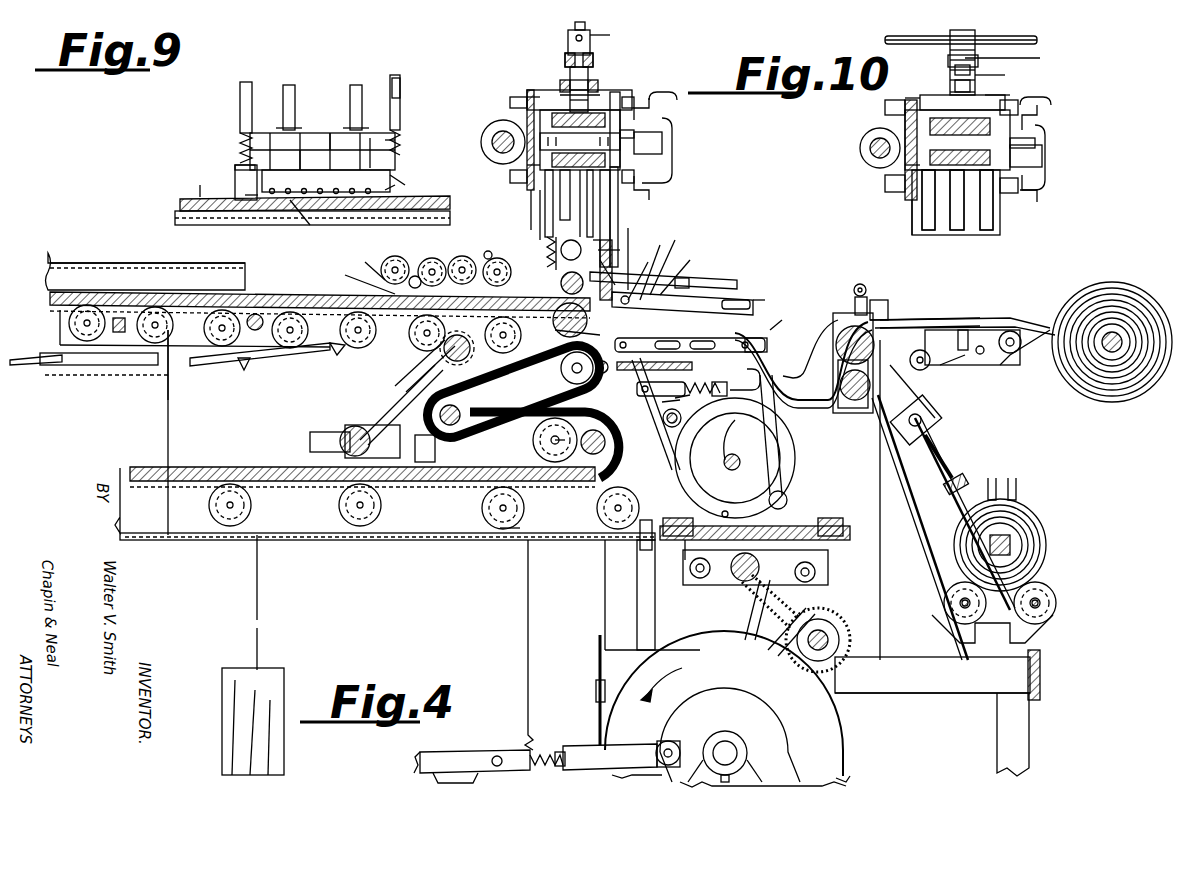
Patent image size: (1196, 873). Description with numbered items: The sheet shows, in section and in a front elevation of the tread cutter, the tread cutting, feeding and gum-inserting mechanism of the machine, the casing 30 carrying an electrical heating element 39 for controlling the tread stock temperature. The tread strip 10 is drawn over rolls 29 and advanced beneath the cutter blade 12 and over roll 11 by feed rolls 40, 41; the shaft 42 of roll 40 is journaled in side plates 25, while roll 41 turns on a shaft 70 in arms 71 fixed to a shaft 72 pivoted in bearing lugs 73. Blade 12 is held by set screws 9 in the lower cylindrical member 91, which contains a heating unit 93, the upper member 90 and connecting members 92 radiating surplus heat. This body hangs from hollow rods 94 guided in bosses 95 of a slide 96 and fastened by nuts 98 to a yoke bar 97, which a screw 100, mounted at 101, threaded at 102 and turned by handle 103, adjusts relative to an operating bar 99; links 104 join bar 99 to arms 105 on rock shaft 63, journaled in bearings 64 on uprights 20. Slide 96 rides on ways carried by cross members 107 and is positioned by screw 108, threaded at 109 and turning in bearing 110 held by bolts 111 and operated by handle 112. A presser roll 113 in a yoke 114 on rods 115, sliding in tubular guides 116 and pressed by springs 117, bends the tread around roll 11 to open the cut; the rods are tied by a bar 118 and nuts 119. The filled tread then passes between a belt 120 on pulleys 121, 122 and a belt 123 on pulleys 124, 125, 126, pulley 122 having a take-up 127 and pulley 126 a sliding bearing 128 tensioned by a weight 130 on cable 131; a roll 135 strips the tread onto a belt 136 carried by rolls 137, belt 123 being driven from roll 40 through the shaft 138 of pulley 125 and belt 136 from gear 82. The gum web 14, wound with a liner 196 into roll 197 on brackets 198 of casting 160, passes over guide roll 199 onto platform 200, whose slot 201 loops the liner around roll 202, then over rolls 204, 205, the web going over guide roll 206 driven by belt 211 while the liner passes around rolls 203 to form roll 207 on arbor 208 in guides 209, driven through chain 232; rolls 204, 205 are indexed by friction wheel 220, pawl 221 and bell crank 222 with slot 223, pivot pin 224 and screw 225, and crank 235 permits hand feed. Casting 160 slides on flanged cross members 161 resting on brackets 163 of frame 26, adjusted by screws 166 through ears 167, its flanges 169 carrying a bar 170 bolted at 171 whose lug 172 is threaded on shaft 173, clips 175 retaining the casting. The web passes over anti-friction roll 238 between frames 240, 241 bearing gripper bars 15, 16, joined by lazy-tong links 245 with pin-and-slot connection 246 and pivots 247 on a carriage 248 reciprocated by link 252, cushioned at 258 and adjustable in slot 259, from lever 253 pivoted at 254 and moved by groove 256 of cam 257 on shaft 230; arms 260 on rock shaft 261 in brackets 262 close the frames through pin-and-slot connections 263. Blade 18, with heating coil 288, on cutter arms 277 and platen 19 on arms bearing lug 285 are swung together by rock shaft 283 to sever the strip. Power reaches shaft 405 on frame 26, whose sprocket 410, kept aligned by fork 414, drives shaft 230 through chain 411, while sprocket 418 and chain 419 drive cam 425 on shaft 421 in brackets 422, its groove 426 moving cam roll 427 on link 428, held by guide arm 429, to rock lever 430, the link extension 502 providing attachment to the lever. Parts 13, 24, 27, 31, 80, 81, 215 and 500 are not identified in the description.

In FIG. 9, the set screws 9 is at (310, 225).
In FIG. 9, the tread strip 10 is at (203, 197).
In FIG. 4, the tread strip 10 is at (305, 291).
In FIG. 9, the roll 11 is at (178, 208).
In FIG. 4, the roll 11 is at (565, 338).
In FIG. 9, the cutter blade 12 is at (395, 180).
In FIG. 4, the cutter blade 12 is at (612, 270).
In FIG. 4, the frame arm 13 is at (654, 418).
In FIG. 4, the gum strip 14 is at (790, 380).
In FIG. 4, the gripper bar 15 is at (643, 269).
In FIG. 4, the gripper bar 16 is at (544, 426).
In FIG. 4, the cutting blade 18 is at (656, 262).
In FIG. 4, the platen 19 is at (588, 452).
In FIG. 4, the upright 20 is at (535, 600).
In FIG. 4, the frame plate 24 is at (120, 480).
In FIG. 4, the side plates 25 is at (185, 407).
In FIG. 4, the frame 26 is at (1000, 708).
In FIG. 4, the guide strip 27 is at (30, 365).
In FIG. 4, the rolls 29 is at (160, 340).
In FIG. 4, the casing 30 is at (48, 275).
In FIG. 4, the table top 31 is at (80, 263).
In FIG. 4, the electrical heating element 39 is at (90, 365).
In FIG. 4, the lower feed roll 40 is at (465, 350).
In FIG. 4, the upper feed roll 41 is at (488, 251).
In FIG. 4, the shaft 42 is at (430, 322).
In FIG. 10, the rock shaft 63 is at (870, 148).
In FIG. 4, the rock shaft 63 is at (492, 142).
In FIG. 10, the bearings 64 is at (908, 100).
In FIG. 4, the bearings 64 is at (528, 97).
In FIG. 4, the shaft 70 is at (497, 261).
In FIG. 4, the arms 71 is at (419, 264).
In FIG. 4, the shaft 72 is at (369, 260).
In FIG. 4, the bearing lugs 73 is at (361, 275).
In FIG. 4, the gear 80 is at (462, 258).
In FIG. 4, the gear 81 is at (434, 259).
In FIG. 4, the gear 82 is at (395, 256).
In FIG. 9, the upper cylindrical member 90 is at (330, 133).
In FIG. 4, the upper cylindrical member 90 is at (592, 240).
In FIG. 9, the lower cylindrical member 91 is at (370, 138).
In FIG. 4, the lower cylindrical member 91 is at (612, 240).
In FIG. 9, the connecting members 92 is at (305, 150).
In FIG. 4, the electrical heating unit 93 is at (612, 255).
In FIG. 9, the vertical rods 94 is at (289, 85).
In FIG. 10, the vertical rods 94 is at (985, 232).
In FIG. 4, the vertical rods 94 is at (600, 210).
In FIG. 10, the guiding bosses 95 is at (985, 222).
In FIG. 4, the guiding bosses 95 is at (615, 92).
In FIG. 10, the slide 96 is at (912, 205).
In FIG. 4, the slide 96 is at (530, 195).
In FIG. 10, the yoke bar 97 is at (978, 62).
In FIG. 4, the yoke bar 97 is at (565, 60).
In FIG. 10, the nuts 98 is at (955, 68).
In FIG. 10, the operating bar 99 is at (1005, 78).
In FIG. 4, the operating bar 99 is at (560, 84).
In FIG. 10, the screw 100 is at (955, 82).
In FIG. 4, the screw 100 is at (598, 80).
In FIG. 4, the rotatable mounting 101 is at (568, 40).
In FIG. 10, the threaded connection 102 is at (952, 92).
In FIG. 4, the threaded connection 102 is at (598, 92).
In FIG. 10, the operating handle 103 is at (900, 36).
In FIG. 4, the operating handle 103 is at (590, 38).
In FIG. 9, the links 104 is at (395, 140).
In FIG. 9, the arms 105 is at (395, 185).
In FIG. 10, the arms 105 is at (905, 168).
In FIG. 4, the arms 105 is at (527, 167).
In FIG. 10, the cross members 107 is at (895, 100).
In FIG. 4, the cross members 107 is at (512, 97).
In FIG. 10, the screw 108 is at (1045, 175).
In FIG. 4, the screw 108 is at (672, 168).
In FIG. 10, the threaded connection 109 is at (1035, 140).
In FIG. 4, the threaded connection 109 is at (540, 130).
In FIG. 10, the bearing 110 is at (1042, 155).
In FIG. 4, the bearing 110 is at (648, 130).
In FIG. 10, the machine bolts 111 is at (1037, 115).
In FIG. 4, the machine bolts 111 is at (645, 100).
In FIG. 10, the handle 112 is at (1048, 200).
In FIG. 4, the handle 112 is at (677, 108).
In FIG. 9, the presser roll 113 is at (252, 195).
In FIG. 4, the presser roll 113 is at (553, 322).
In FIG. 9, the yoke 114 is at (240, 168).
In FIG. 4, the yoke 114 is at (560, 252).
In FIG. 9, the rods 115 is at (398, 80).
In FIG. 10, the rods 115 is at (950, 225).
In FIG. 4, the rods 115 is at (555, 245).
In FIG. 9, the tubular guides 116 is at (240, 92).
In FIG. 10, the tubular guides 116 is at (925, 225).
In FIG. 4, the tubular guides 116 is at (540, 200).
In FIG. 9, the springs 117 is at (240, 137).
In FIG. 4, the springs 117 is at (547, 240).
In FIG. 10, the bar 118 is at (875, 135).
In FIG. 4, the bar 118 is at (495, 128).
In FIG. 10, the nuts 119 is at (905, 120).
In FIG. 4, the nuts 119 is at (527, 150).
In FIG. 4, the belt 120 is at (514, 392).
In FIG. 4, the pulley 121 is at (450, 428).
In FIG. 4, the pulley 122 is at (568, 380).
In FIG. 4, the belt 123 is at (400, 400).
In FIG. 4, the pulley 124 is at (425, 366).
In FIG. 4, the pulley 125 is at (545, 452).
In FIG. 4, the pulley 126 is at (390, 439).
In FIG. 4, the take-up 127 is at (590, 383).
In FIG. 4, the sliding bearing 128 is at (377, 446).
In FIG. 4, the weight 130 is at (245, 718).
In FIG. 4, the cable 131 is at (330, 445).
In FIG. 4, the roll 135 is at (600, 510).
In FIG. 4, the belt 136 is at (160, 540).
In FIG. 4, the rolls 137 is at (250, 508).
In FIG. 4, the shaft 138 is at (533, 441).
In FIG. 4, the casting 160 is at (880, 480).
In FIG. 4, the cross members 161 is at (683, 570).
In FIG. 4, the brackets 163 is at (665, 620).
In FIG. 4, the screws 166 is at (640, 545).
In FIG. 4, the ears 167 is at (665, 540).
In FIG. 4, the flanges 169 is at (774, 501).
In FIG. 4, the bar 170 is at (700, 580).
In FIG. 4, the bolts 171 is at (685, 555).
In FIG. 4, the lug 172 is at (742, 610).
In FIG. 4, the shaft 173 is at (745, 582).
In FIG. 4, the clips 175 is at (668, 518).
In FIG. 4, the liner 196 is at (965, 513).
In FIG. 4, the roll 197 is at (1108, 402).
In FIG. 4, the brackets 198 is at (1040, 340).
In FIG. 4, the guide roll 199 is at (1010, 353).
In FIG. 4, the platform 200 is at (965, 355).
In FIG. 4, the slot 201 is at (910, 325).
In FIG. 4, the roll 202 is at (925, 370).
In FIG. 4, the rolls 203 is at (960, 625).
In FIG. 4, the roll 204 is at (889, 297).
In FIG. 4, the roll 205 is at (860, 408).
In FIG. 4, the guide roll 206 is at (830, 320).
In FIG. 4, the liner roll 207 is at (1046, 530).
In FIG. 4, the arbor 208 is at (1010, 520).
In FIG. 4, the guides 209 is at (1000, 478).
In FIG. 4, the belt 211 is at (840, 388).
In FIG. 4, the block 215 is at (868, 300).
In FIG. 4, the friction wheel 220 is at (905, 318).
In FIG. 4, the friction pawl 221 is at (915, 325).
In FIG. 4, the bell crank 222 is at (940, 408).
In FIG. 4, the slot 223 is at (930, 400).
In FIG. 4, the pivot pin 224 is at (940, 420).
In FIG. 4, the screw 225 is at (945, 450).
In FIG. 4, the cam shaft 230 is at (718, 469).
In FIG. 4, the chain 232 is at (925, 495).
In FIG. 4, the crank 235 is at (858, 284).
In FIG. 4, the anti-friction roll 238 is at (770, 330).
In FIG. 4, the lower frame 240 is at (740, 272).
In FIG. 4, the upper frame 241 is at (740, 344).
In FIG. 4, the lazy-tong links 245 is at (675, 240).
In FIG. 4, the pin and slot connection 246 is at (690, 270).
In FIG. 4, the pivot 247 is at (690, 344).
In FIG. 4, the carriage 248 is at (646, 389).
In FIG. 4, the link 252 is at (682, 387).
In FIG. 4, the lever 253 is at (790, 450).
In FIG. 4, the pivot 254 is at (760, 488).
In FIG. 4, the cam groove 256 is at (735, 458).
In FIG. 4, the cam 257 is at (785, 495).
In FIG. 4, the spring cushion 258 is at (686, 404).
In FIG. 4, the slot 259 is at (782, 415).
In FIG. 4, the arms 260 is at (760, 298).
In FIG. 4, the rock shaft 261 is at (705, 295).
In FIG. 4, the brackets 262 is at (769, 378).
In FIG. 4, the pin and slot connections 263 is at (740, 300).
In FIG. 4, the cutter arms 277 is at (690, 260).
In FIG. 4, the rock shaft 283 is at (664, 428).
In FIG. 4, the lug 285 is at (661, 407).
In FIG. 4, the electrical heating coil 288 is at (644, 248).
In FIG. 4, the shaft 405 is at (830, 638).
In FIG. 4, the sprocket 410 is at (800, 650).
In FIG. 4, the chain 411 is at (790, 640).
In FIG. 4, the fork 414 is at (796, 623).
In FIG. 4, the sprocket 418 is at (858, 668).
In FIG. 4, the chain 419 is at (845, 695).
In FIG. 4, the shaft 421 is at (735, 745).
In FIG. 4, the vertical brackets 422 is at (763, 791).
In FIG. 4, the cam 425 is at (830, 742).
In FIG. 4, the cam groove 426 is at (840, 778).
In FIG. 4, the cam roll 427 is at (648, 745).
In FIG. 4, the adjustable link 428 is at (590, 745).
In FIG. 4, the guide arm 429 is at (612, 776).
In FIG. 4, the lever 430 is at (490, 750).
In FIG. 4, the rod 500 is at (595, 695).
In FIG. 4, the link extension 502 is at (425, 758).